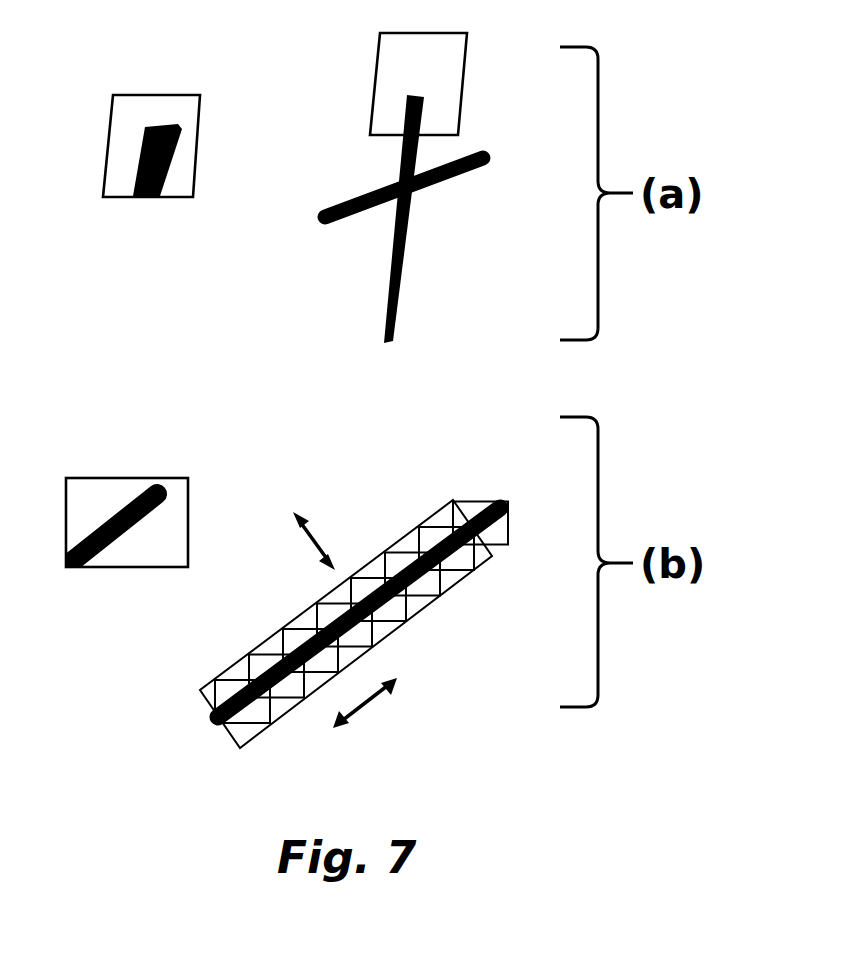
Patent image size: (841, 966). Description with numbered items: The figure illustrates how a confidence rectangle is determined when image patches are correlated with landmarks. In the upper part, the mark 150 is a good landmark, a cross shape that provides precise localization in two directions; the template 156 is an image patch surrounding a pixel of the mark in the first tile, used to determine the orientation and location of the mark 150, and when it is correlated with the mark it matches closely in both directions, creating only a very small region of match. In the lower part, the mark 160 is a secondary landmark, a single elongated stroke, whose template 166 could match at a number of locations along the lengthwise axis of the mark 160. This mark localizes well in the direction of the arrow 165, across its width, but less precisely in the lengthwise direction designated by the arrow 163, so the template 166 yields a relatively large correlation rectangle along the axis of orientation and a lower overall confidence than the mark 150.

The template 156 is at (160, 93).
The mark 150 is at (473, 152).
The template 166 is at (125, 477).
The mark 160 is at (477, 510).
The arrow 165 is at (317, 545).
The arrow 163 is at (370, 702).